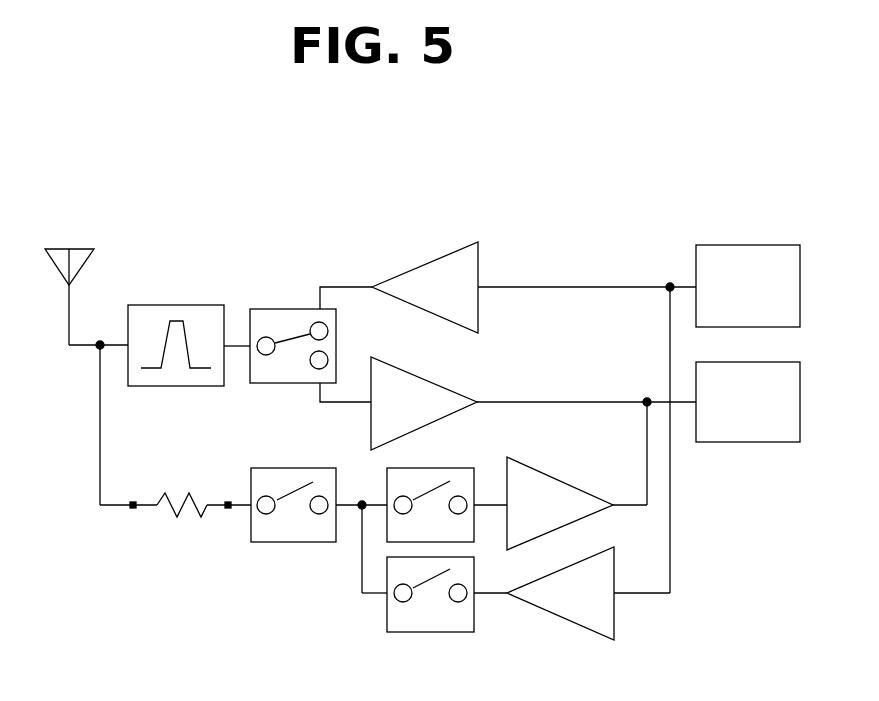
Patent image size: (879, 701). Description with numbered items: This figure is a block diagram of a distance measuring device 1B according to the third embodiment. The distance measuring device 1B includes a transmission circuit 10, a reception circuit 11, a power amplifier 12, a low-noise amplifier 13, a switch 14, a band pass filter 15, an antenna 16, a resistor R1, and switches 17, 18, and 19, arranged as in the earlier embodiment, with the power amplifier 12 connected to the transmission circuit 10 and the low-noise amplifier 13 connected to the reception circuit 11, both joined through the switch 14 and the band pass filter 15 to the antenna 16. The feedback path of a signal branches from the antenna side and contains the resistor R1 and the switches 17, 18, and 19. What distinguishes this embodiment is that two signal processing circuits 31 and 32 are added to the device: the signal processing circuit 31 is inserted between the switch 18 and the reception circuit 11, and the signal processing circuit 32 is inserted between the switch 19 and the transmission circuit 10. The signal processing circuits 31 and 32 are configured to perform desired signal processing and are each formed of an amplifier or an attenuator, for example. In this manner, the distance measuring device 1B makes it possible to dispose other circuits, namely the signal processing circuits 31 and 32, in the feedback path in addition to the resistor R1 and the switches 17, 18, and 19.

The distance measuring device 1B is at (530, 170).
The transmission circuit 10 is at (746, 244).
The reception circuit 11 is at (748, 444).
The power amplifier 12 is at (432, 262).
The low-noise amplifier 13 is at (432, 379).
The switch 14 is at (296, 309).
The band pass filter 15 is at (178, 305).
The antenna 16 is at (84, 248).
The switch 17 is at (296, 468).
The switch 18 is at (433, 467).
The switch 19 is at (427, 633).
The signal processing circuit 31 is at (585, 520).
The signal processing circuit 32 is at (616, 613).
The resistor R1 is at (182, 493).